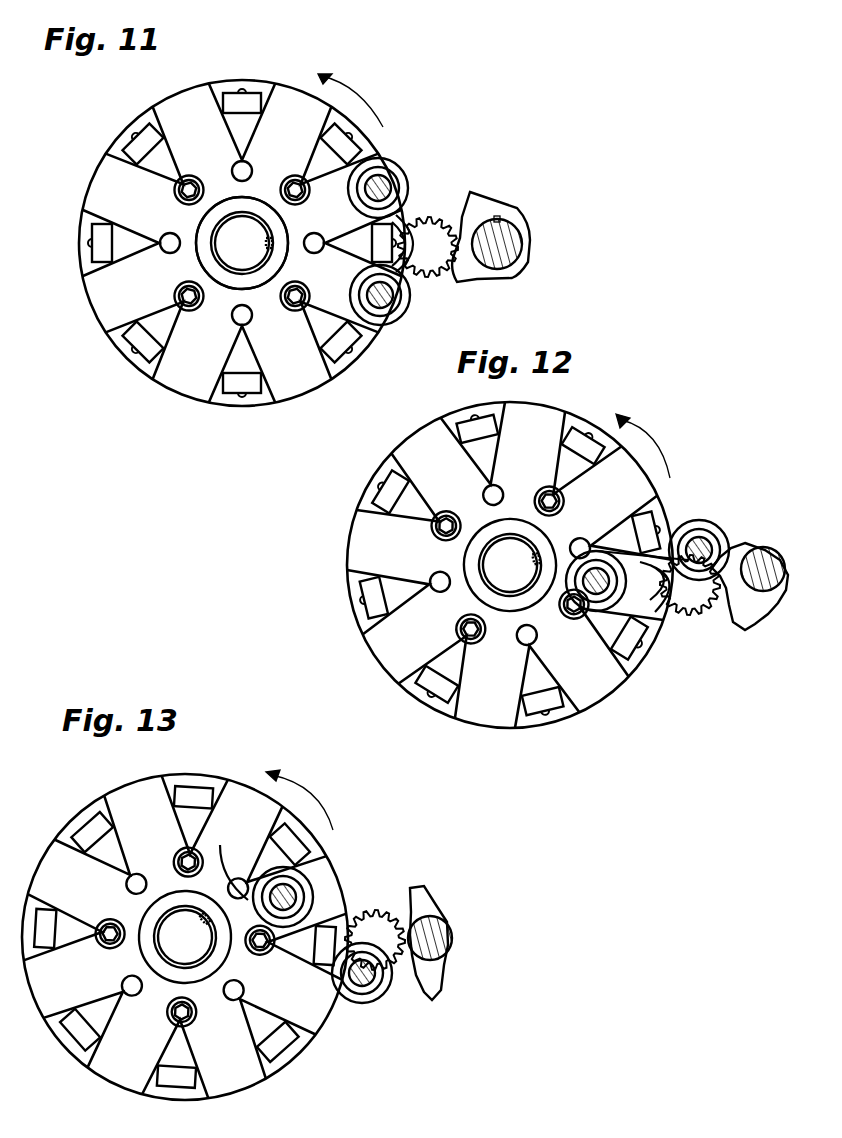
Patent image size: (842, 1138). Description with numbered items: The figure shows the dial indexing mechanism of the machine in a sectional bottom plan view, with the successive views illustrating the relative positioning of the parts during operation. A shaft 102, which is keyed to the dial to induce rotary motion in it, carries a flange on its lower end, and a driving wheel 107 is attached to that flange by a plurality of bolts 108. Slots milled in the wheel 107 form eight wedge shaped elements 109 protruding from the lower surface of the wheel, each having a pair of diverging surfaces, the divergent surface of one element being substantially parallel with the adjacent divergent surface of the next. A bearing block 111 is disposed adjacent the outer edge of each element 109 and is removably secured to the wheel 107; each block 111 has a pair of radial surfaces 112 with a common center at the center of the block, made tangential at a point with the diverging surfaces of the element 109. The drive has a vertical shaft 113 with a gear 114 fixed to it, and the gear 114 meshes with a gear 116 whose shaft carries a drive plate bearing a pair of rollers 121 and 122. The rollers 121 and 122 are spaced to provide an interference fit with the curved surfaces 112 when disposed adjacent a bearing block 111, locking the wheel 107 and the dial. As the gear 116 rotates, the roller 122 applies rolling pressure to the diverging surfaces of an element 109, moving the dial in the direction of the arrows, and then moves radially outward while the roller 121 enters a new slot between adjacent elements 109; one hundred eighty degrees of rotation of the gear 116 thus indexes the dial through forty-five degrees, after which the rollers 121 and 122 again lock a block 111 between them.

In FIG. 11, the shaft 102 is at (240, 198).
In FIG. 11, the driving wheel 107 is at (231, 74).
In FIG. 12, the driving wheel 107 is at (350, 516).
In FIG. 13, the driving wheel 107 is at (130, 783).
In FIG. 11, the bolts 108 is at (296, 176).
In FIG. 12, the bolts 108 is at (447, 542).
In FIG. 13, the bolts 108 is at (200, 858).
In FIG. 11, the wedge shaped elements 109 is at (190, 148).
In FIG. 12, the wedge shaped elements 109 is at (465, 470).
In FIG. 13, the wedge shaped elements 109 is at (205, 925).
In FIG. 11, the bearing block 111 is at (132, 148).
In FIG. 12, the bearing block 111 is at (625, 518).
In FIG. 13, the bearing block 111 is at (198, 931).
In FIG. 11, the radial surfaces 112 is at (212, 100).
In FIG. 12, the radial surfaces 112 is at (665, 536).
In FIG. 11, the vertical shaft 113 is at (528, 232).
In FIG. 12, the vertical shaft 113 is at (777, 528).
In FIG. 13, the vertical shaft 113 is at (450, 947).
In FIG. 11, the gear 114 is at (483, 194).
In FIG. 12, the gear 114 is at (765, 608).
In FIG. 13, the gear 114 is at (423, 893).
In FIG. 11, the gear 116 is at (420, 284).
In FIG. 12, the gear 116 is at (697, 610).
In FIG. 13, the gear 116 is at (357, 910).
In FIG. 11, the roller 121 is at (402, 172).
In FIG. 12, the roller 121 is at (712, 524).
In FIG. 13, the roller 121 is at (368, 1001).
In FIG. 11, the roller 122 is at (373, 324).
In FIG. 12, the roller 122 is at (575, 560).
In FIG. 13, the roller 122 is at (312, 880).